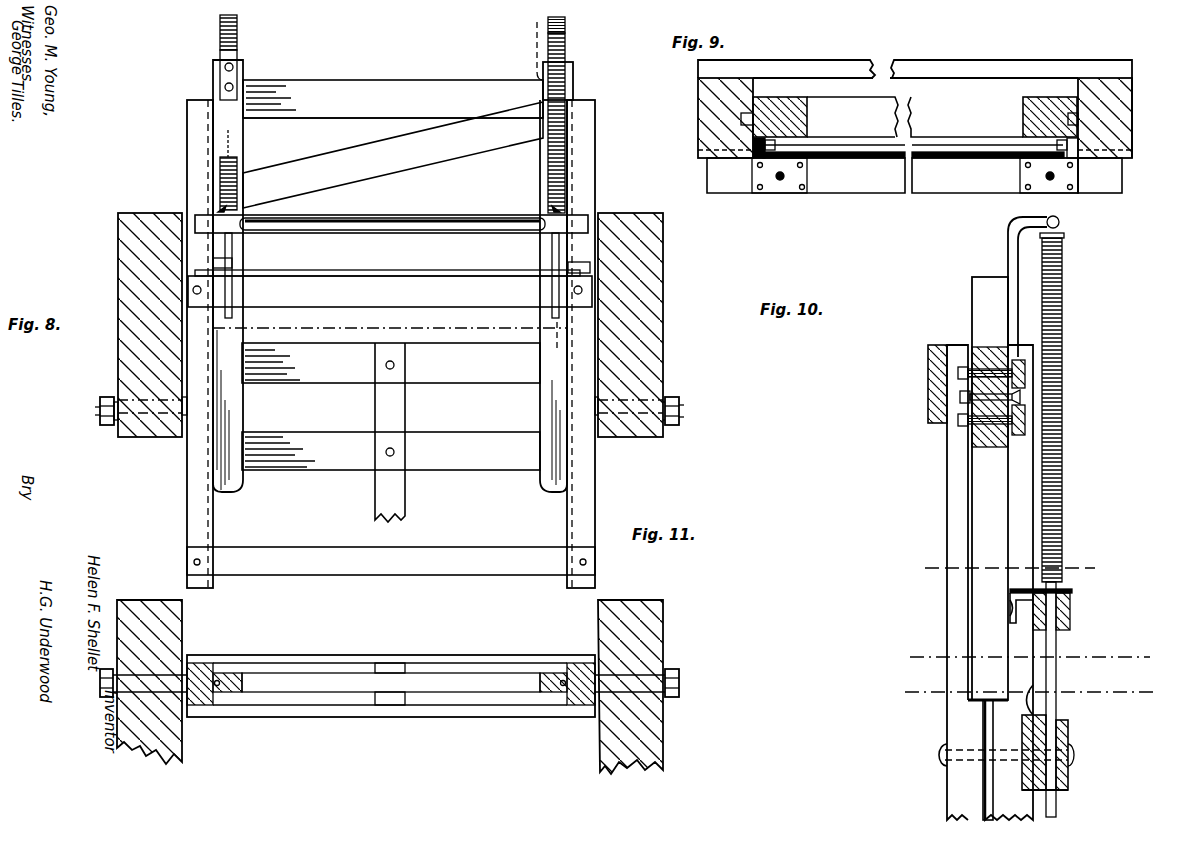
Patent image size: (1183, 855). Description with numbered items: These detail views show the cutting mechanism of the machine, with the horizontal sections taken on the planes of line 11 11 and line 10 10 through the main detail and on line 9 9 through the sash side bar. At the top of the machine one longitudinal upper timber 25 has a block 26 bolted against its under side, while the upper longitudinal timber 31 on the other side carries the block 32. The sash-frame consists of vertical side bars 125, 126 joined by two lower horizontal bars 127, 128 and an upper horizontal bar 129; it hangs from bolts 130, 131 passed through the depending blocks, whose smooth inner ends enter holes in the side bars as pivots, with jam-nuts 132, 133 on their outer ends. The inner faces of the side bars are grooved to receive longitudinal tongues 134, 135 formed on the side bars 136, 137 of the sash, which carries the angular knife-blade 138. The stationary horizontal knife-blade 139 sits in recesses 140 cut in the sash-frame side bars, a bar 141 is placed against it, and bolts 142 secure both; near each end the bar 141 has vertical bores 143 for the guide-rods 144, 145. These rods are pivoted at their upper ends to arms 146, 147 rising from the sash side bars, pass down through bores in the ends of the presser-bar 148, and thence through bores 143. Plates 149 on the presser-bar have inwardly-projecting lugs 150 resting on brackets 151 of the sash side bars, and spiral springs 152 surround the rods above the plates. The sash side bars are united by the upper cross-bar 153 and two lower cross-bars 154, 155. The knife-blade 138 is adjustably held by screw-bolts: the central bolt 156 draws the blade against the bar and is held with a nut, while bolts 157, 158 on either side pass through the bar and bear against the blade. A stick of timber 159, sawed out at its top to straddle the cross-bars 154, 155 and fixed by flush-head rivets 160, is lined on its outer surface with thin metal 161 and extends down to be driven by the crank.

In FIG. 10, the section line 9- 9 is at (927, 560).
In FIG. 8, the section line 10- 10 is at (532, 23).
In FIG. 8, the section line 11- 11 is at (103, 318).
In FIG. 8, the longitudinal upper timber 25 is at (118, 266).
In FIG. 8, the block 26 is at (118, 386).
In FIG. 11, the block 26 is at (149, 682).
In FIG. 8, the upper longitudinal timber 31 is at (608, 346).
In FIG. 8, the block 32 is at (630, 325).
In FIG. 11, the block 32 is at (652, 632).
In FIG. 8, the side bar of the sash-frame 125 is at (584, 487).
In FIG. 11, the side bar of the sash-frame 125 is at (580, 698).
In FIG. 9, the side bar of the sash-frame 125 is at (1105, 118).
In FIG. 10, the side bar of the sash-frame 125 is at (945, 507).
In FIG. 8, the side bar of the sash-frame 126 is at (187, 514).
In FIG. 11, the side bar of the sash-frame 126 is at (205, 695).
In FIG. 9, the side bar of the sash-frame 126 is at (697, 141).
In FIG. 11, the lower horizontal bar 127 is at (345, 651).
In FIG. 9, the lower horizontal bar 127 is at (855, 61).
In FIG. 8, the lower horizontal bar 128 is at (391, 561).
In FIG. 11, the lower horizontal bar 128 is at (322, 710).
In FIG. 8, the upper horizontal bar 129 is at (393, 128).
In FIG. 10, the upper horizontal bar 129 is at (928, 394).
In FIG. 8, the bolt 130 is at (679, 410).
In FIG. 11, the bolt 130 is at (640, 678).
In FIG. 8, the bolt 131 is at (100, 410).
In FIG. 11, the bolt 131 is at (148, 690).
In FIG. 8, the jam-nut 132 is at (672, 397).
In FIG. 11, the jam-nut 132 is at (672, 698).
In FIG. 8, the jam-nut 133 is at (112, 425).
In FIG. 11, the jam-nut 133 is at (112, 672).
In FIG. 8, the longitudinal tongue 134 is at (573, 84).
In FIG. 11, the longitudinal tongue 134 is at (568, 688).
In FIG. 9, the longitudinal tongue 134 is at (1059, 121).
In FIG. 8, the longitudinal tongue 135 is at (212, 84).
In FIG. 11, the longitudinal tongue 135 is at (215, 675).
In FIG. 9, the longitudinal tongue 135 is at (745, 112).
In FIG. 8, the side bar of the sash 136 is at (542, 454).
In FIG. 11, the side bar of the sash 136 is at (552, 680).
In FIG. 9, the side bar of the sash 136 is at (1023, 125).
In FIG. 10, the side bar of the sash 136 is at (990, 488).
In FIG. 8, the side bar of the sash 137 is at (234, 416).
In FIG. 11, the side bar of the sash 137 is at (240, 680).
In FIG. 9, the side bar of the sash 137 is at (888, 117).
In FIG. 8, the angular knife-blade 138 is at (393, 155).
In FIG. 10, the angular knife-blade 138 is at (1025, 372).
In FIG. 8, the stationary horizontal knife-blade 139 is at (476, 274).
In FIG. 9, the stationary horizontal knife-blade 139 is at (913, 151).
In FIG. 10, the stationary horizontal knife-blade 139 is at (1035, 715).
In FIG. 8, the recess 140 is at (232, 263).
In FIG. 10, the recess 140 is at (992, 798).
In FIG. 8, the bar 141 is at (390, 302).
In FIG. 9, the bar 141 is at (892, 175).
In FIG. 10, the bar 141 is at (1069, 736).
In FIG. 8, the bolt 142 is at (202, 290).
In FIG. 10, the bolt 142 is at (1072, 760).
In FIG. 10, the vertical bore 143 is at (1050, 793).
In FIG. 8, the guide-rod 144 is at (551, 256).
In FIG. 9, the guide-rod 144 is at (1052, 180).
In FIG. 10, the guide-rod 144 is at (1057, 683).
In FIG. 8, the guide-rod 145 is at (232, 245).
In FIG. 9, the guide-rod 145 is at (782, 180).
In FIG. 8, the arm 146 is at (565, 40).
In FIG. 10, the arm 146 is at (1008, 256).
In FIG. 8, the arm 147 is at (233, 60).
In FIG. 8, the presser-bar 148 is at (446, 219).
In FIG. 9, the presser-bar 148 is at (1117, 180).
In FIG. 10, the presser-bar 148 is at (1070, 617).
In FIG. 8, the plate 149 is at (220, 208).
In FIG. 9, the plate 149 is at (768, 195).
In FIG. 10, the plate 149 is at (1072, 592).
In FIG. 9, the lug 150 is at (752, 150).
In FIG. 10, the lug 150 is at (1014, 585).
In FIG. 9, the bracket 151 is at (772, 145).
In FIG. 10, the bracket 151 is at (1010, 606).
In FIG. 8, the spiral spring 152 is at (222, 175).
In FIG. 10, the spiral spring 152 is at (1063, 462).
In FIG. 8, the upper cross-bar 153 is at (480, 100).
In FIG. 8, the lower cross-bar 154 is at (490, 370).
In FIG. 8, the lower cross-bar 155 is at (502, 434).
In FIG. 10, the screw-bolt 156 is at (1022, 397).
In FIG. 10, the screw-bolt 157 is at (992, 428).
In FIG. 10, the screw-bolt 158 is at (988, 368).
In FIG. 8, the stick of timber 159 is at (405, 492).
In FIG. 11, the stick of timber 159 is at (405, 665).
In FIG. 8, the flush-head rivet 160 is at (385, 366).
In FIG. 11, the thin metal lining 161 is at (395, 664).